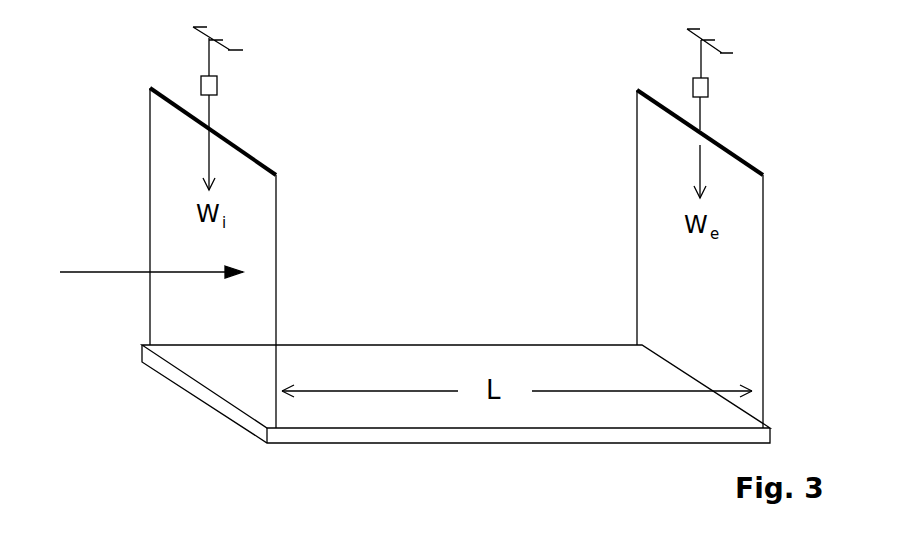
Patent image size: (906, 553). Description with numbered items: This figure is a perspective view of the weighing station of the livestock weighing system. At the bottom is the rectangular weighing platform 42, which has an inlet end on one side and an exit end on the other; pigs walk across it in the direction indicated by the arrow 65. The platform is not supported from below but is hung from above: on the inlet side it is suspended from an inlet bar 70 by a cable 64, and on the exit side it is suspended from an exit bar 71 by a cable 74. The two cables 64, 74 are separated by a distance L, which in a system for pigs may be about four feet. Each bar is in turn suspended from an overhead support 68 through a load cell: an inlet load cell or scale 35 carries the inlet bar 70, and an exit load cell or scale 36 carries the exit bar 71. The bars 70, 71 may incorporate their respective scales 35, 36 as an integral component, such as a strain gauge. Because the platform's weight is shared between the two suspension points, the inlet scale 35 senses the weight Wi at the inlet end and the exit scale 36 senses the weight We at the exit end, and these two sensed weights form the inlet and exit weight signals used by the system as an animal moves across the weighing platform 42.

The inlet load cell or scale 35 is at (217, 85).
The exit load cell or scale 36 is at (708, 87).
The weighing platform 42 is at (480, 442).
The cable 64 is at (147, 160).
The arrow 65 is at (125, 270).
The overhead support 68 is at (230, 50).
The inlet bar 70 is at (233, 145).
The exit bar 71 is at (723, 148).
The cable 74 is at (765, 245).